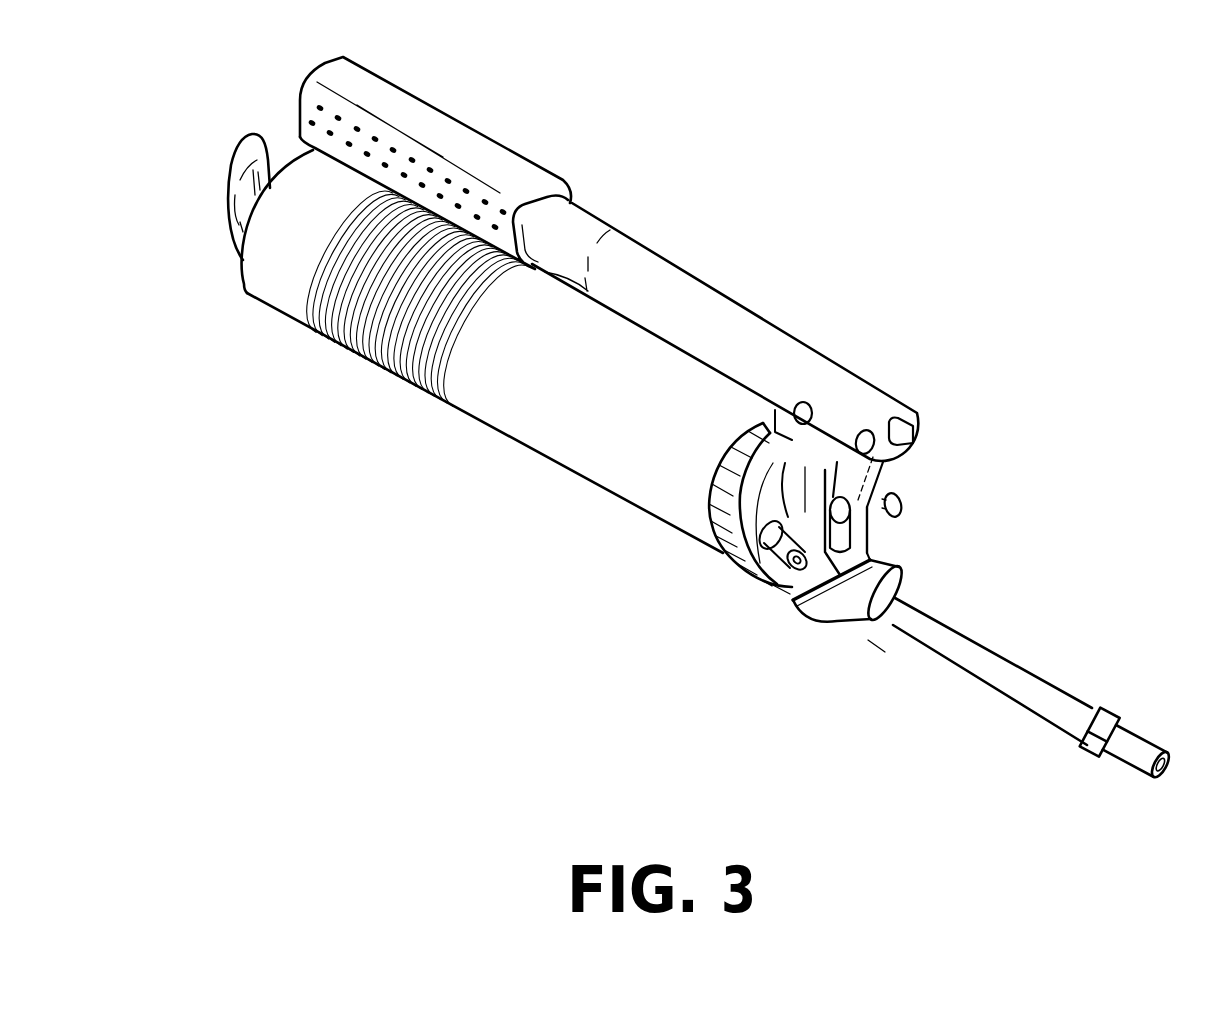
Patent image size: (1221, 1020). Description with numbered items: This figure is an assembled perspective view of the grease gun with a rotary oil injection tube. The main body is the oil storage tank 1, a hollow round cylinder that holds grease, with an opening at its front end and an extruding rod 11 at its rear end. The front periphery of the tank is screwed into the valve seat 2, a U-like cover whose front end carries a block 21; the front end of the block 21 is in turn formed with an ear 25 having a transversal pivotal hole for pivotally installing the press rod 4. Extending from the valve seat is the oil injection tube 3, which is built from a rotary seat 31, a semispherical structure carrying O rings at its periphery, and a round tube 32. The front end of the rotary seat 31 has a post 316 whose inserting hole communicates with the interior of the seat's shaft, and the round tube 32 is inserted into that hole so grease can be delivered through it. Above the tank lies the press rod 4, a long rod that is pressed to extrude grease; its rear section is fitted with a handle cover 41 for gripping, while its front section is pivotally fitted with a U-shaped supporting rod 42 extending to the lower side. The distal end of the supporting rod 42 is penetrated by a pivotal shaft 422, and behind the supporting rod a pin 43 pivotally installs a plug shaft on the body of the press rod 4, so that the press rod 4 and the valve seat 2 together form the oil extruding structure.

The oil storage tank 1 is at (592, 467).
The extruding rod 11 is at (232, 220).
The valve seat 2 is at (723, 553).
The block 21 is at (858, 555).
The ear 25 is at (877, 557).
The oil injection tube 3 is at (902, 718).
The rotary seat 31 is at (810, 625).
The post 316 is at (862, 612).
The round tube 32 is at (1023, 690).
The press rod 4 is at (705, 297).
The handle cover 41 is at (497, 158).
The supporting rod 42 is at (905, 398).
The pivotal shaft 422 is at (902, 495).
The pin 43 is at (803, 405).